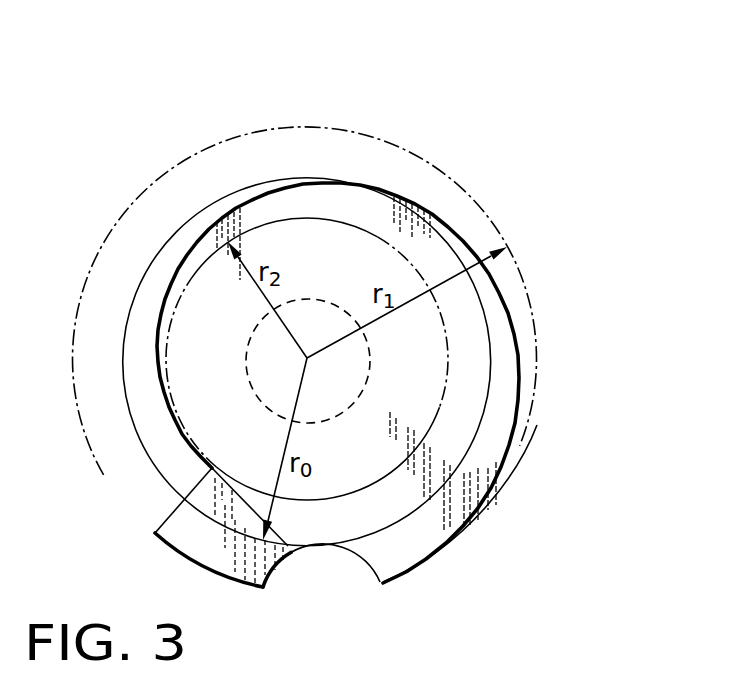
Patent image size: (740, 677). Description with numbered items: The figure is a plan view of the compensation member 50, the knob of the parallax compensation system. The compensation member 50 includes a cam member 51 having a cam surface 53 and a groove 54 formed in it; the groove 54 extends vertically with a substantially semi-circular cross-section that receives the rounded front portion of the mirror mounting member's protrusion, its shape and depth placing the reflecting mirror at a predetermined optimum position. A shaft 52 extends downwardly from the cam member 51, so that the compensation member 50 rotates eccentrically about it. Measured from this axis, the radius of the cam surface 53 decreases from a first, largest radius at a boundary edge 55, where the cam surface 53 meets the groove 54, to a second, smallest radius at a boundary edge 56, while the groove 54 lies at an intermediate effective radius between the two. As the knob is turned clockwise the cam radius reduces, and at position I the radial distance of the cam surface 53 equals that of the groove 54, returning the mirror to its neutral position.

The compensation member 50 is at (358, 108).
The position I is at (390, 190).
The cam member 51 is at (465, 490).
The shaft 52 is at (248, 378).
The cam surface 53 is at (443, 556).
The groove 54 is at (303, 551).
The boundary edge 55 is at (379, 584).
The boundary edge 56 is at (210, 468).